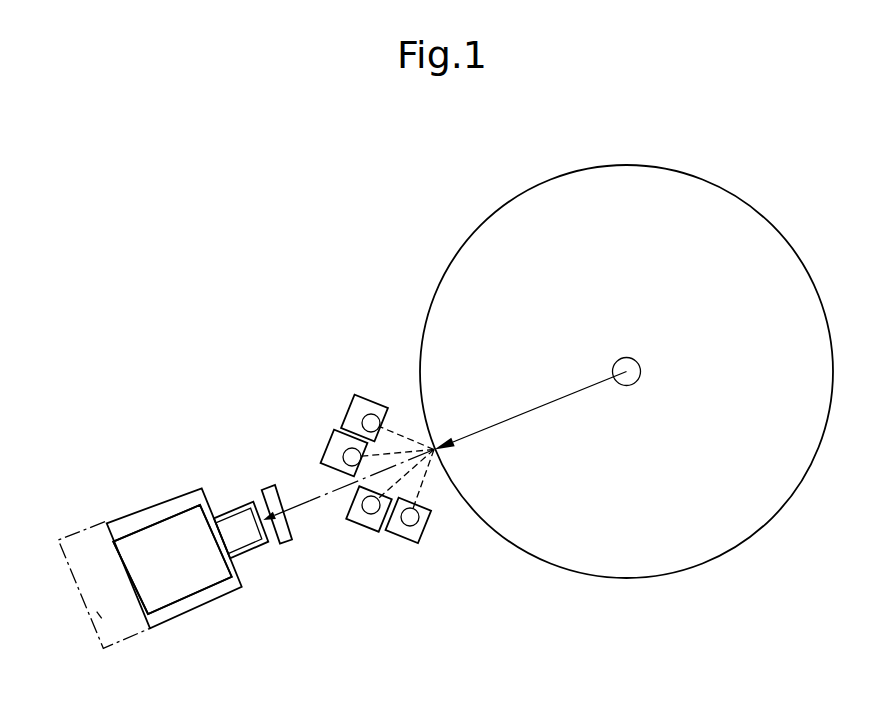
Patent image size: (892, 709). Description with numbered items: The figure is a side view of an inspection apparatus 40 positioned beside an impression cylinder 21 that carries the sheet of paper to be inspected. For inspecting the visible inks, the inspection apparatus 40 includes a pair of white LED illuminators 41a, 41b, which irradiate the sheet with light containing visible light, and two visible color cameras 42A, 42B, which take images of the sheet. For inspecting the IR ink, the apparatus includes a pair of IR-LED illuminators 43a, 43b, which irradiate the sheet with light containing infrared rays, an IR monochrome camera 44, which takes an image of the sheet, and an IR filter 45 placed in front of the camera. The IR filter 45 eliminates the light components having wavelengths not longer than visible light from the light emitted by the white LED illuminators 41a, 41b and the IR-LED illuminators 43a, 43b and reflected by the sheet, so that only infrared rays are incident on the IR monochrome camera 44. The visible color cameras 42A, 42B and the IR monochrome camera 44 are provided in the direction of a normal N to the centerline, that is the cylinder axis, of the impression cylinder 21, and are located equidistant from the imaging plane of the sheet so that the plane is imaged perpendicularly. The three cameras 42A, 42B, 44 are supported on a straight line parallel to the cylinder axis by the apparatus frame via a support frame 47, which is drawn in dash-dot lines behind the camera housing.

The impression cylinder 21 is at (763, 485).
The normal N is at (540, 407).
The inspection apparatus 40 is at (284, 421).
The white LED illuminator 41a is at (402, 537).
The white LED illuminator 41b is at (363, 399).
The IR-LED illuminator 43a is at (360, 525).
The IR-LED illuminator 43b is at (331, 437).
The IR monochrome camera 44 is at (132, 514).
The IR filter 45 is at (269, 487).
The visible color camera 42A is at (180, 590).
The visible color camera 42B is at (172, 559).
The support frame 47 is at (88, 634).